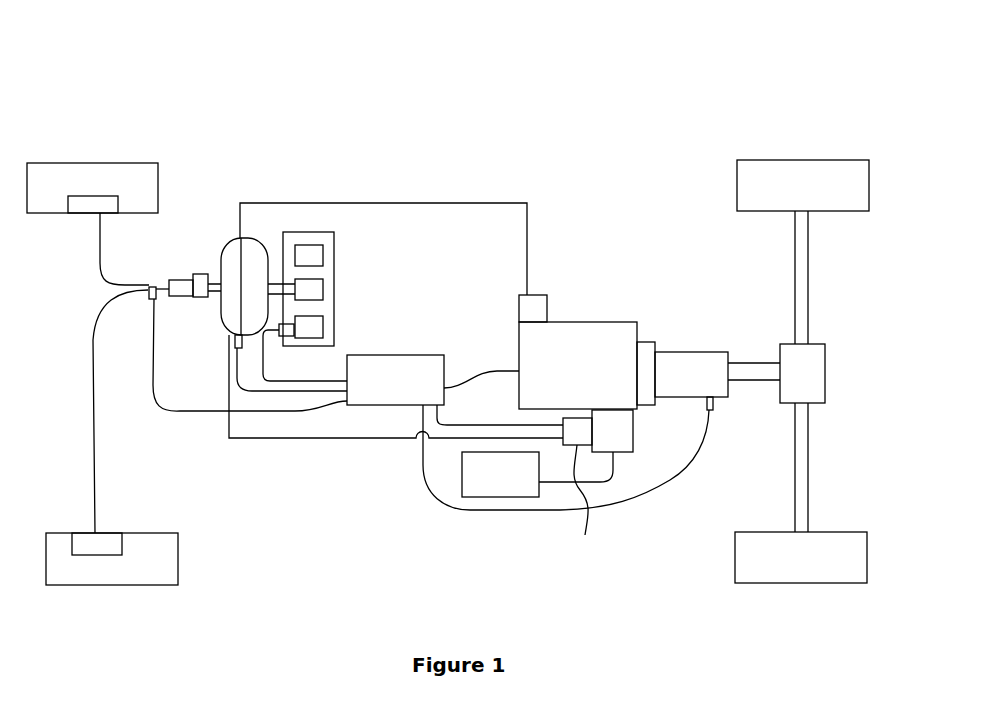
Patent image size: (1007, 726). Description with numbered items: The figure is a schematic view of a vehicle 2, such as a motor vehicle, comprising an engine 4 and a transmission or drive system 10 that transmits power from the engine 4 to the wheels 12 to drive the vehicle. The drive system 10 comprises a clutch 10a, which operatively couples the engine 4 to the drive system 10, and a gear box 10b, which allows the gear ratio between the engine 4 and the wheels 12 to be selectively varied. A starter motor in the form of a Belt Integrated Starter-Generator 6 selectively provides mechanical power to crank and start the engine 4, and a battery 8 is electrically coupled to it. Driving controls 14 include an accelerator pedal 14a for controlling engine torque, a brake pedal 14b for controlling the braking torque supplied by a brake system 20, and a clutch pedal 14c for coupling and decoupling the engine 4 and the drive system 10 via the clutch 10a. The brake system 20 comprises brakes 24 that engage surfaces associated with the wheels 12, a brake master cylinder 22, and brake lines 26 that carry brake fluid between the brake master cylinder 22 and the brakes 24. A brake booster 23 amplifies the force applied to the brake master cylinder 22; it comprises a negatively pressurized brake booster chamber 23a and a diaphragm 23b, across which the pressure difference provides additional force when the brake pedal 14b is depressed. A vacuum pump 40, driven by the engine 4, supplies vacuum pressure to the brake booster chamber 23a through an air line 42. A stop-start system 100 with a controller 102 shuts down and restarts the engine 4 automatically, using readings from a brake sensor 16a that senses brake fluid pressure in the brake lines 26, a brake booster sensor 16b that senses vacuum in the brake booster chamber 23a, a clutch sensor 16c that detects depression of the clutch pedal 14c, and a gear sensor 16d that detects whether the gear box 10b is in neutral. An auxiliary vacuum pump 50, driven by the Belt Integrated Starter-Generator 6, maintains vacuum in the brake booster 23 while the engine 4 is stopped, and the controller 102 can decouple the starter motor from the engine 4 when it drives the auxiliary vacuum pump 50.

The vehicle 2 is at (636, 73).
The engine 4 is at (578, 365).
The Belt Integrated Starter-Generator 6 is at (598, 431).
The battery 8 is at (537, 474).
The drive system 10 is at (736, 298).
The clutch 10a is at (645, 347).
The gear box 10b is at (691, 374).
The wheels 12 is at (98, 172).
The driving controls 14 is at (343, 235).
The accelerator pedal 14a is at (323, 253).
The brake pedal 14b is at (323, 290).
The clutch pedal 14c is at (323, 328).
The brake sensor 16a is at (149, 298).
The brake booster sensor 16b is at (233, 342).
The clutch sensor 16c is at (287, 337).
The gear sensor 16d is at (713, 403).
The brake system 20 is at (277, 152).
The brake master cylinder 22 is at (185, 297).
The brake booster 23 is at (238, 185).
The brake booster chamber 23a is at (233, 262).
The diaphragm 23b is at (243, 266).
The brakes 24 is at (80, 210).
The brake lines 26 is at (92, 352).
The vacuum pump 40 is at (538, 302).
The air line 42 is at (505, 203).
The auxiliary vacuum pump 50 is at (580, 510).
The stop-start system 100 is at (392, 491).
The controller 102 is at (528, 432).